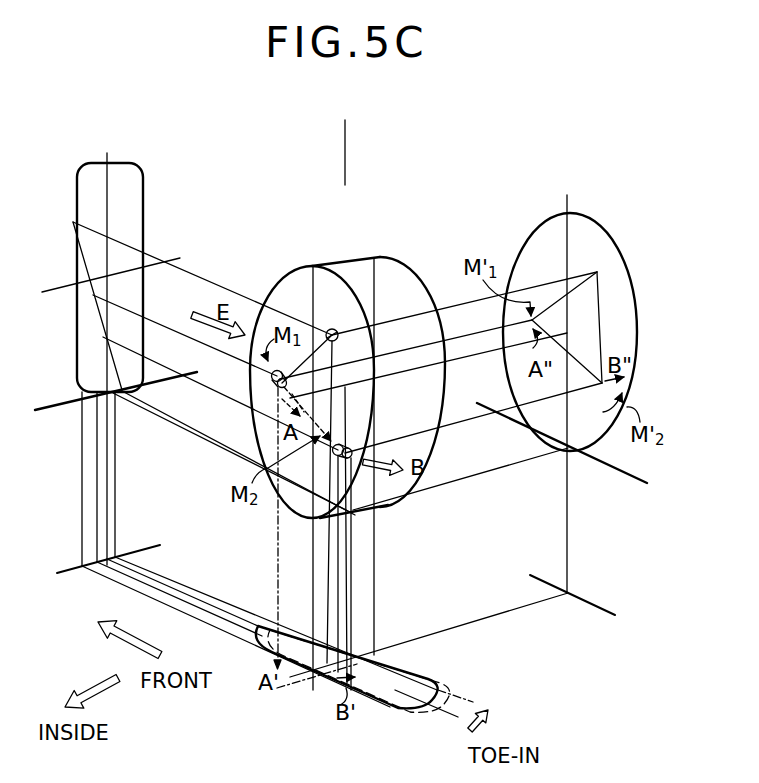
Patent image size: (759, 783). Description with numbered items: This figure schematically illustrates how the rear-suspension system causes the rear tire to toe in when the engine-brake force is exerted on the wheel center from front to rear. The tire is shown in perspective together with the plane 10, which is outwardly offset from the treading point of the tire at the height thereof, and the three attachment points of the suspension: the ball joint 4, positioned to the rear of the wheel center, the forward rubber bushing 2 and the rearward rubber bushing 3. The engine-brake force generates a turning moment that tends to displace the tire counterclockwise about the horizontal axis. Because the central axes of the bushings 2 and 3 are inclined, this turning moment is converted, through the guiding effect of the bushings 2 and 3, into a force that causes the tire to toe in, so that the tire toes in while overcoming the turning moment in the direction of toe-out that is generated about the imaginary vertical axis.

The plane 10 is at (85, 268).
The forward rubber bushing 2 is at (271, 378).
The rearward rubber bushing 3 is at (345, 447).
The ball joint 4 is at (332, 329).